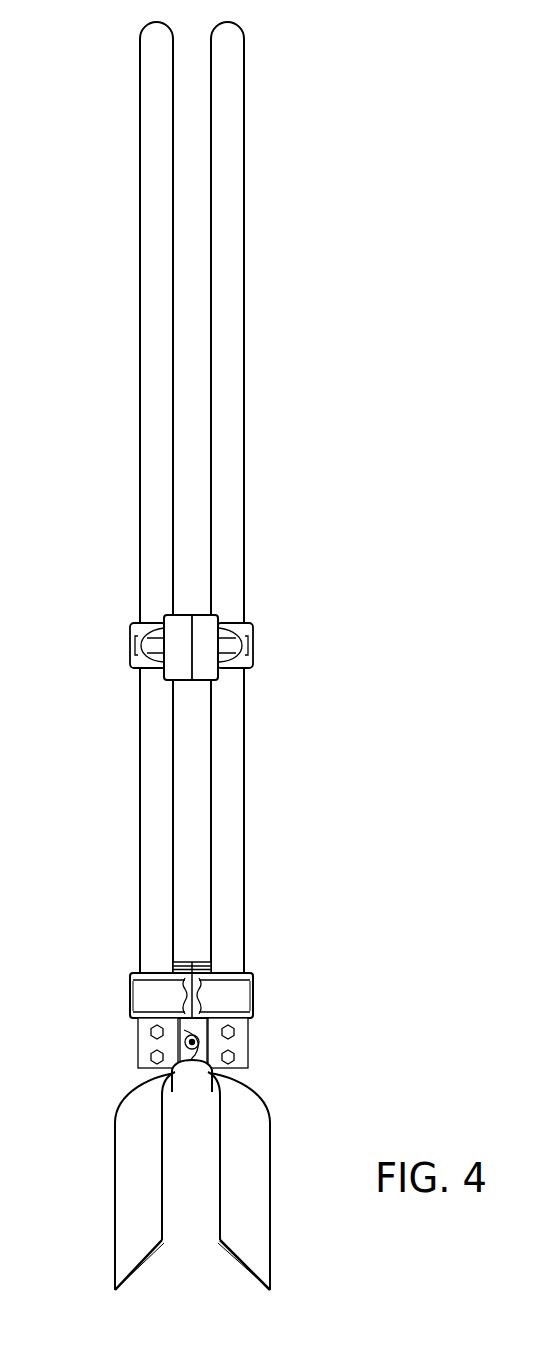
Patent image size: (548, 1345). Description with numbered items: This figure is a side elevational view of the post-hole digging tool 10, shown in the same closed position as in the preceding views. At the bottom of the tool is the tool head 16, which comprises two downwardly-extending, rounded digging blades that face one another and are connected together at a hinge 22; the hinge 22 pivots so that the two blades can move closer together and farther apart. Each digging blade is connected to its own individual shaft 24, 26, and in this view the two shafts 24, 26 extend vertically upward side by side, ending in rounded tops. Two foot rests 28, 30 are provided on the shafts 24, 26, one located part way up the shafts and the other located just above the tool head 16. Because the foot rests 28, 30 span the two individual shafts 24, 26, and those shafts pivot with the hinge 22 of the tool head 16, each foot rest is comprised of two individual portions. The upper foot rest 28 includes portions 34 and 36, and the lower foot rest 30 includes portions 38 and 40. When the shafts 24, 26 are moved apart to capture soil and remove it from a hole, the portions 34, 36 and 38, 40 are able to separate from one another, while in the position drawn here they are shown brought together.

The post-hole digging tool 10 is at (76, 493).
The tool head 16 is at (120, 1095).
The hinge 22 is at (196, 1050).
The shaft 24 is at (150, 287).
The shaft 26 is at (233, 398).
The foot rest 28 is at (260, 628).
The foot rest 30 is at (126, 994).
The portion 34 is at (133, 648).
The portion 36 is at (243, 648).
The portion 38 is at (140, 989).
The portion 40 is at (238, 995).